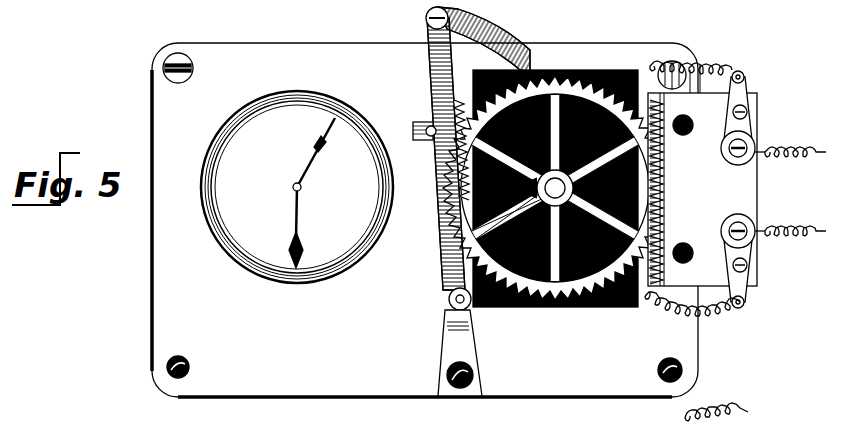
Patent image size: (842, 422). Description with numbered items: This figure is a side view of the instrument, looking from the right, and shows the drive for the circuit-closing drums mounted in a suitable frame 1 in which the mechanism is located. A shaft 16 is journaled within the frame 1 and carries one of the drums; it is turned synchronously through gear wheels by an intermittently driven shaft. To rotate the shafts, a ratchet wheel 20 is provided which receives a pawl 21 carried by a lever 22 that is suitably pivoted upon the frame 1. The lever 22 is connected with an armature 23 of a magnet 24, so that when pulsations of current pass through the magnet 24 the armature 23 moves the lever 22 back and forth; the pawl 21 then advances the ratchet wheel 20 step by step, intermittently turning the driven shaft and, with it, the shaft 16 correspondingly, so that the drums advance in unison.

The frame 1 is at (425, 220).
The shaft 16 is at (575, 188).
The ratchet wheel 20 is at (565, 85).
The pawl 21 is at (503, 42).
The lever 22 is at (430, 84).
The armature 23 is at (418, 127).
The magnet 24 is at (628, 74).